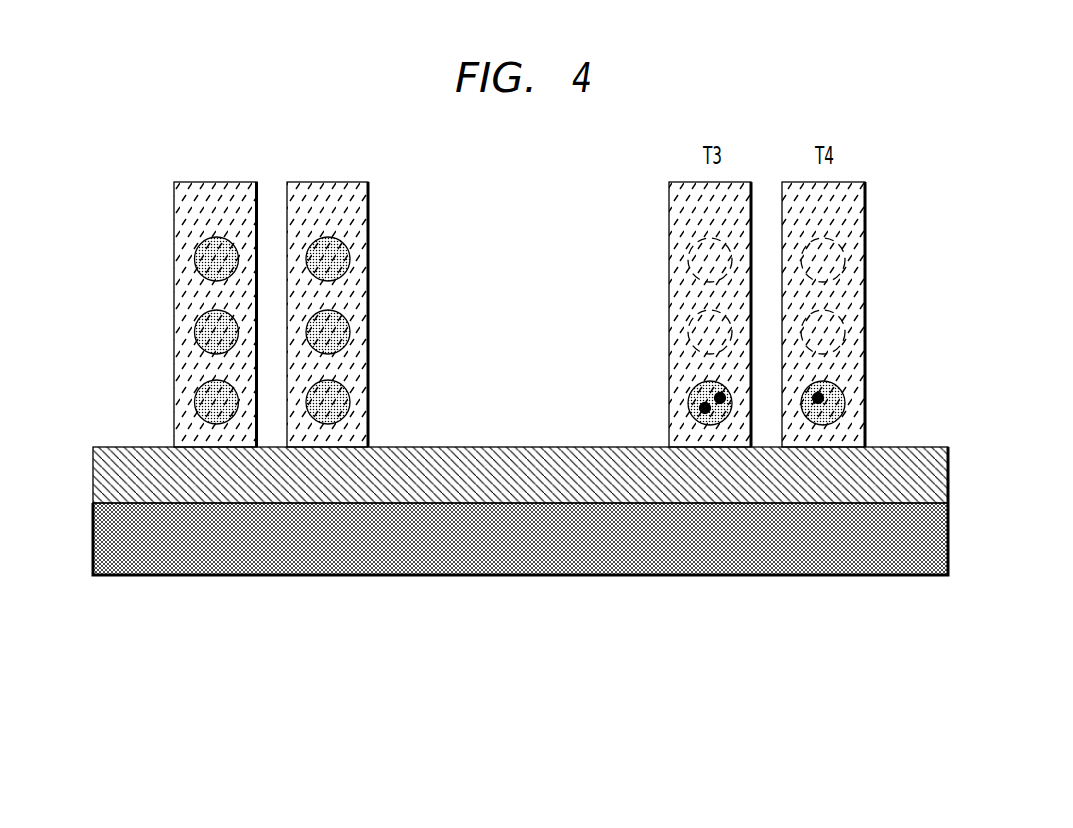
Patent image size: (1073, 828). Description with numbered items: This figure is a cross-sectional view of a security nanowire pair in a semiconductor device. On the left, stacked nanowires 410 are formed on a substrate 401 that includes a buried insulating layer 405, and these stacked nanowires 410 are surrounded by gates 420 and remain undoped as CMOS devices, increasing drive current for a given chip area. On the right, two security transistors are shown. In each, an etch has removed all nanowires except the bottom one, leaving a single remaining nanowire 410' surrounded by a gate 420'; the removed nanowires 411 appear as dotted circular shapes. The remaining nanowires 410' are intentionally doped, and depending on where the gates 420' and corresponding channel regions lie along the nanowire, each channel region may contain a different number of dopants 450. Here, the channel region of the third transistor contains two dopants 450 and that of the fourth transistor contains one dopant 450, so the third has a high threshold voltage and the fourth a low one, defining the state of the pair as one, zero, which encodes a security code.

The substrate 401 is at (949, 540).
The buried insulating layer 405 is at (949, 476).
The stacked nanowires 410 is at (276, 331).
The remaining nanowire 410' is at (771, 390).
The removed nanowires 411 is at (850, 269).
The gates 420 is at (276, 314).
The gates 420' is at (771, 314).
The dopants 450 is at (702, 408).